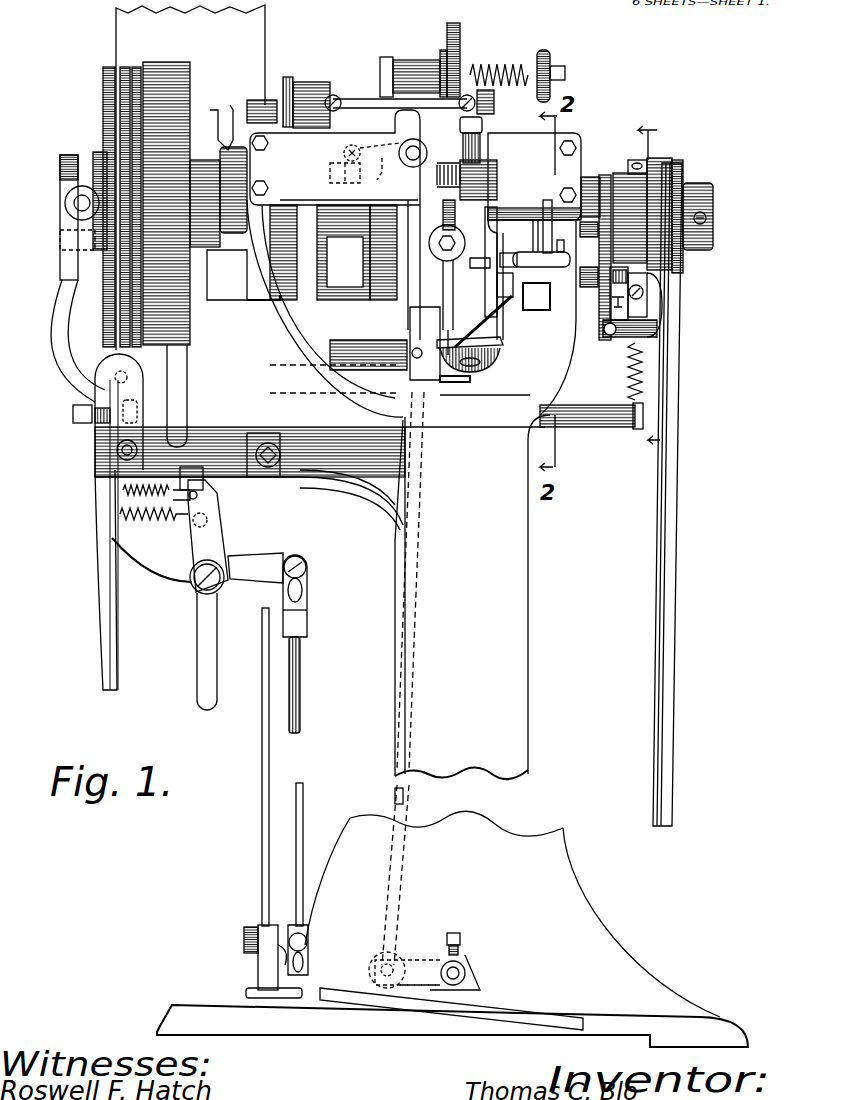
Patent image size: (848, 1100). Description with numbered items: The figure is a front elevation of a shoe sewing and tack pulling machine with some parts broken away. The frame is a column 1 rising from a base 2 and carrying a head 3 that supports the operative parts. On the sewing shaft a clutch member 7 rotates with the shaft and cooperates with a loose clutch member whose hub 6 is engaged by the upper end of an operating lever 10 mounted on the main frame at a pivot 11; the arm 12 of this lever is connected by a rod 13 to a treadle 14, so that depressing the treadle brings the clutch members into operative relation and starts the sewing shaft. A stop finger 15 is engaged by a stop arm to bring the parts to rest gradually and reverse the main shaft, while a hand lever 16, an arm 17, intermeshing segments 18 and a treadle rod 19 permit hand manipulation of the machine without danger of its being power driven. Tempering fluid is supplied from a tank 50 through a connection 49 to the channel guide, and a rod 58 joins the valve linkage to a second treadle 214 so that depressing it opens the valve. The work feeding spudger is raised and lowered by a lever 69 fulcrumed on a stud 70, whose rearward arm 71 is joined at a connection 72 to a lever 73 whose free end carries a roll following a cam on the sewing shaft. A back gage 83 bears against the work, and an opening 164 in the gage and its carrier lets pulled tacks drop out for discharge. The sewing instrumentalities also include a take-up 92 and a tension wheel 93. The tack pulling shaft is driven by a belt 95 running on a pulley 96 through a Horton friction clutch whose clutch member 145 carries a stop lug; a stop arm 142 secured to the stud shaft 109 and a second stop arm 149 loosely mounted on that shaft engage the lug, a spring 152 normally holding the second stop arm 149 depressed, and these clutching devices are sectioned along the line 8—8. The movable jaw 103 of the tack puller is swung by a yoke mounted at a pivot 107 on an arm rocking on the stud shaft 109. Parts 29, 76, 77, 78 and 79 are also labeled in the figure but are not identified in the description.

The column 1 is at (530, 614).
The base 2 is at (728, 1028).
The head 3 is at (522, 398).
The hub 6 is at (68, 158).
The clutch member 7 is at (191, 78).
The section line 8- 8 is at (640, 286).
The operating lever 10 is at (54, 302).
The pivot 11 is at (113, 378).
The arm 12 is at (276, 390).
The rod 13 is at (421, 547).
The treadle 14 is at (396, 1000).
The stop finger 15 is at (188, 352).
The hand lever 16 is at (197, 646).
The arm 17 is at (264, 580).
The intermeshing segments 18 is at (230, 538).
The treadle rod 19 is at (301, 682).
The shaft 29 is at (437, 303).
The connection 49 is at (505, 310).
The tank 50 is at (266, 30).
The rod 58 is at (262, 860).
The lever 69 is at (440, 150).
The stud 70 is at (404, 142).
The arm 71 is at (378, 182).
The connection 72 is at (344, 152).
The lever 73 is at (330, 180).
The screw 76 is at (494, 106).
The bar 77 is at (372, 92).
The bracket 78 is at (282, 100).
The arm 79 is at (330, 90).
The back gage 83 is at (488, 360).
The take-up 92 is at (450, 212).
The tension wheel 93 is at (455, 30).
The belt 95 is at (680, 428).
The pulley 96 is at (686, 162).
The movable jaw 103 is at (495, 342).
The pivot 107 is at (548, 335).
The stud shaft 109 is at (336, 306).
The stop arm 142 is at (640, 160).
The clutch member 145 is at (637, 213).
The second stop arm 149 is at (640, 303).
The spring 152 is at (645, 380).
The opening 164 is at (482, 372).
The treadle 214 is at (258, 995).